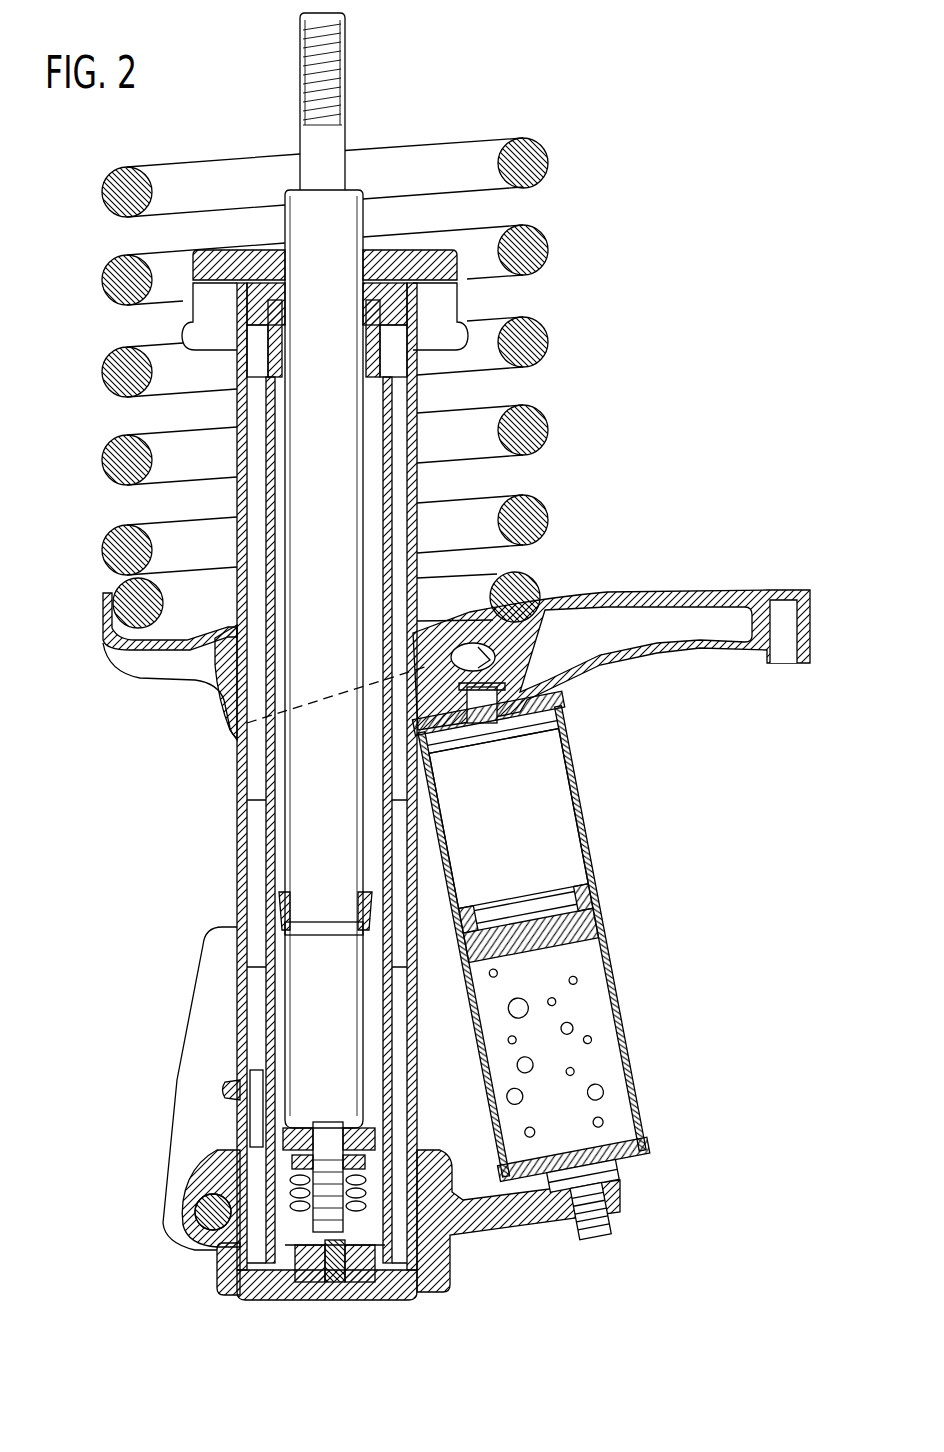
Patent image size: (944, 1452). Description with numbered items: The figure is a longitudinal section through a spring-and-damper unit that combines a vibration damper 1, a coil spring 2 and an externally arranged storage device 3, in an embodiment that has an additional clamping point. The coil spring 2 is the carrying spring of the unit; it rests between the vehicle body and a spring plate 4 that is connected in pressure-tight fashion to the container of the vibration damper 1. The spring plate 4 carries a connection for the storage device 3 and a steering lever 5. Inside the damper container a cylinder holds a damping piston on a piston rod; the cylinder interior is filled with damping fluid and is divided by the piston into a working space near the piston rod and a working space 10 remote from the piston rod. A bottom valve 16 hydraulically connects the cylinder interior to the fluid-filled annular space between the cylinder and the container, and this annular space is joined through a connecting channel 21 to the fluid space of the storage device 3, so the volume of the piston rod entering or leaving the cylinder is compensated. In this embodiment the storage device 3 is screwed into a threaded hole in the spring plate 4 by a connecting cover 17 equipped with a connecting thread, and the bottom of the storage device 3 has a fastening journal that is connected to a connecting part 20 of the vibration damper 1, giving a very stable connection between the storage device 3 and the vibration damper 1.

The vibration damper 1 is at (233, 780).
The coil spring 2 is at (552, 440).
The storage device 3 is at (565, 971).
The spring plate 4 is at (113, 642).
The steering lever 5 is at (611, 619).
The working space remote from the piston rod 10 is at (283, 1220).
The bottom valve 16 is at (413, 1300).
The connecting cover 17 is at (555, 706).
The connecting part 20 is at (427, 1240).
The connecting channel 21 is at (483, 667).